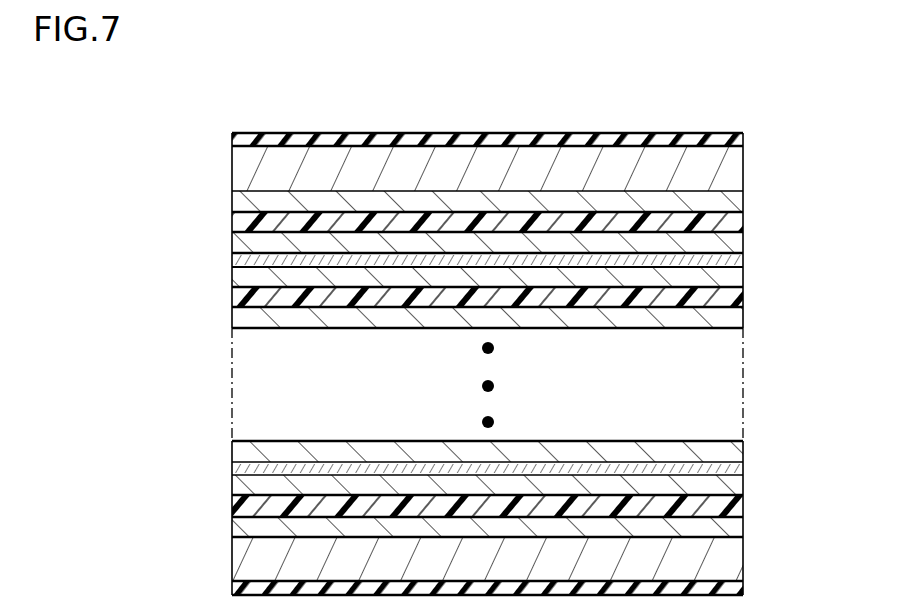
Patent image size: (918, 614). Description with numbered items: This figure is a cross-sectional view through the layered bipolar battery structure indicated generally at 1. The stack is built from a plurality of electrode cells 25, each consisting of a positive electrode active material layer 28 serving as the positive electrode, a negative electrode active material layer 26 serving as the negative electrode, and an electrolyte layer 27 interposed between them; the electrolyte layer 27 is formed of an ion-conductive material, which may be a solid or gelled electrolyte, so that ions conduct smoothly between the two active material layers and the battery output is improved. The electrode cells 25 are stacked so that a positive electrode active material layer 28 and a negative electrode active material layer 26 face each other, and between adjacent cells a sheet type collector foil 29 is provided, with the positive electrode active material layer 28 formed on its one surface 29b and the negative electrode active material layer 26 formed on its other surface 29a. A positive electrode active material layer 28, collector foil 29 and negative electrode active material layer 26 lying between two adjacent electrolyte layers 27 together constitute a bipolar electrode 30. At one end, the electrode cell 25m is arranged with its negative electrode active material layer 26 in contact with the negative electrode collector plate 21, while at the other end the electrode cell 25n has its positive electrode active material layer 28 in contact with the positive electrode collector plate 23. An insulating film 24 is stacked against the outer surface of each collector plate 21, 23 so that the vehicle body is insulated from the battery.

The fuel cell stack 1 is at (104, 129).
The negative electrode collector plate 21 is at (707, 167).
The positive electrode collector plate 23 is at (700, 558).
The insulating film 24 is at (247, 142).
The electrode cell 25 is at (806, 262).
The electrode cell 25m is at (806, 168).
The electrode cell 25n is at (806, 462).
The negative electrode active material layer 26 is at (707, 200).
The electrolyte layer 27 is at (707, 220).
The positive electrode active material layer 28 is at (707, 243).
The collector foil 29 is at (247, 259).
The other surface of collector foil 29a is at (277, 267).
The one surface of collector foil 29b is at (277, 253).
The bipolar electrode 30 is at (168, 420).